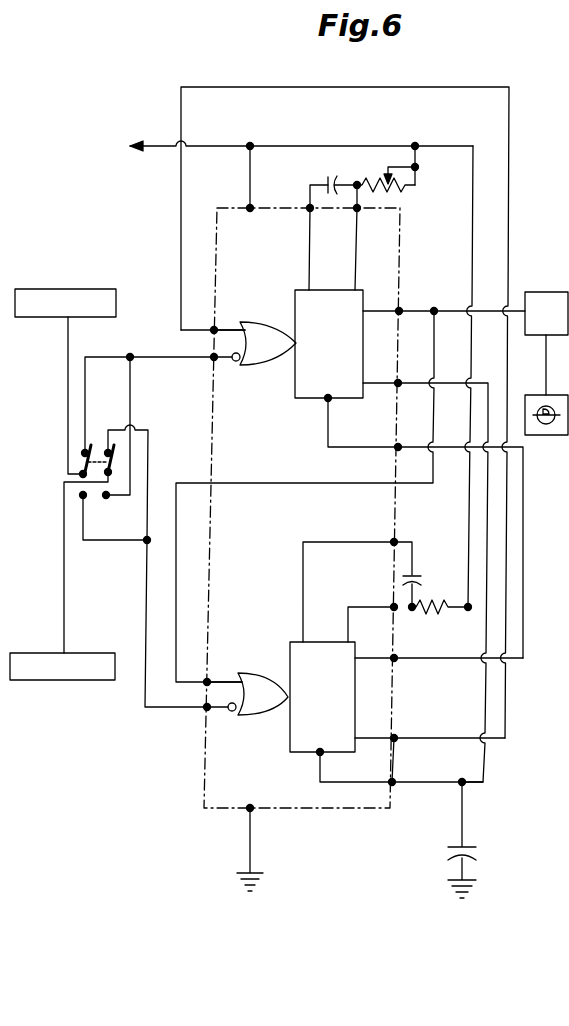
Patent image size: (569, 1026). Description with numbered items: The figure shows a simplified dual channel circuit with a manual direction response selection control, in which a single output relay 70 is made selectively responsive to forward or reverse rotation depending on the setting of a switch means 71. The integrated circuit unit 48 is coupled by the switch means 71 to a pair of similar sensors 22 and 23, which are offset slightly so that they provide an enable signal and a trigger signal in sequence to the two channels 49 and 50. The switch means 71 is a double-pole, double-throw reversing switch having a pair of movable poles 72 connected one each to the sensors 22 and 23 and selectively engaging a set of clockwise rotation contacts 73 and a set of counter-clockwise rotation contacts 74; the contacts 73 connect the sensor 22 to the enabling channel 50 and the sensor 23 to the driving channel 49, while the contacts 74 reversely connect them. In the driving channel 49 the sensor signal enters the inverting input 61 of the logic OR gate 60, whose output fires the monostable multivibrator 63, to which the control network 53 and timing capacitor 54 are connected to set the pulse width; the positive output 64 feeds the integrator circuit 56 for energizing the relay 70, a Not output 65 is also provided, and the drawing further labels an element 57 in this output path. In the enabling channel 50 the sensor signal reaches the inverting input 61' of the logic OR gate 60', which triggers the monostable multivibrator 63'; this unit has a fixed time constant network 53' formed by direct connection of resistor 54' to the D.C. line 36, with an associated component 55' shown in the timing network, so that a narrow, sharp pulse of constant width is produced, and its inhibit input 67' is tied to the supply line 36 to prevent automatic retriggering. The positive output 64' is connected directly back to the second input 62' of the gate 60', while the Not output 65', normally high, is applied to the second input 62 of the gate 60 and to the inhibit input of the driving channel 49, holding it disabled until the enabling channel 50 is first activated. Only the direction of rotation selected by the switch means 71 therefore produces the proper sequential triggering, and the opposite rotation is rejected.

The sensor 22 is at (84, 289).
The sensor 23 is at (82, 681).
The D.C. line 36 is at (226, 146).
The integrated circuit unit 48 is at (212, 399).
The driving channel 49 is at (158, 228).
The enabling channel 50 is at (182, 771).
The control network 53 is at (321, 223).
The timing capacitor 54 is at (308, 182).
The integrator circuit 56 is at (386, 190).
The digital-to-analog converter / adjustment 57 is at (400, 167).
The logic OR gate 60 is at (268, 367).
The inverting input 61 is at (242, 393).
The second input 62 is at (240, 305).
The monostable multivibrator 63 is at (329, 344).
The positive output 64 is at (350, 464).
The Not output 65 is at (423, 581).
The output relay 70 is at (543, 437).
The switch means 71 is at (100, 428).
The movable poles 72 is at (88, 464).
The clockwise rotation contacts 73 is at (90, 451).
The counter-clockwise rotation contacts 74 is at (83, 498).
The fixed time constant network 53' is at (375, 578).
The resistor 54' is at (437, 582).
The resistor 55' is at (440, 626).
The logic OR gate 60' is at (263, 719).
The inverting input 61' is at (225, 744).
The second input 62' is at (232, 657).
The monostable multivibrator 63' is at (322, 697).
The positive output 64' is at (439, 674).
The Not output 65' is at (430, 726).
The inhibit input 67' is at (400, 767).